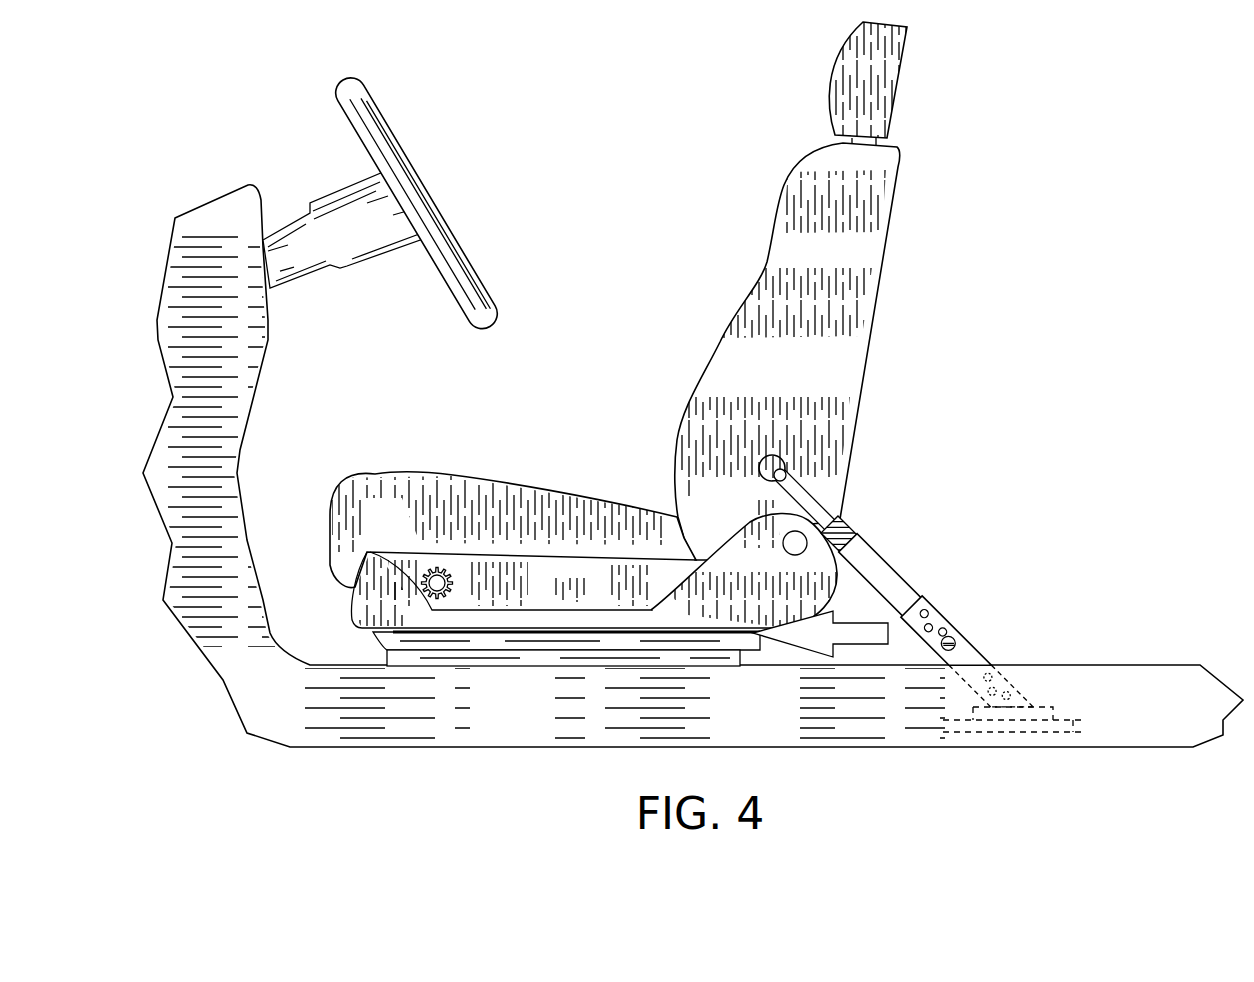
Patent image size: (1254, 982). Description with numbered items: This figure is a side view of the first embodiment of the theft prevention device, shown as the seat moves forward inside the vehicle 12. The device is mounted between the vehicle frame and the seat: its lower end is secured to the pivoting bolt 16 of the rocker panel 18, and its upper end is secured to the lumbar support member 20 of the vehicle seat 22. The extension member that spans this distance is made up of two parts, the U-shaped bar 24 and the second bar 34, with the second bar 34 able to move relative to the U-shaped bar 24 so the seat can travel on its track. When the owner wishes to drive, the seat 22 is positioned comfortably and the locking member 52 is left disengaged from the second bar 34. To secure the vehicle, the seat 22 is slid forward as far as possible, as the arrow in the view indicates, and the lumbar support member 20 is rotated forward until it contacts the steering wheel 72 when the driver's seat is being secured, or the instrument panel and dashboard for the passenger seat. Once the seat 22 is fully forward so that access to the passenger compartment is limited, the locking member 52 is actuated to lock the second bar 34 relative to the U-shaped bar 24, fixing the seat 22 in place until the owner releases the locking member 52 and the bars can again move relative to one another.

The vehicle 12 is at (691, 374).
The pivoting bolt 16 is at (1057, 708).
The rocker panel 18 is at (1073, 734).
The lumbar support member 20 is at (661, 324).
The vehicle seat 22 is at (720, 262).
The U-shaped bar 24 is at (967, 662).
The second bar 34 is at (898, 593).
The locking member 52 is at (948, 643).
The steering wheel 72 is at (333, 85).